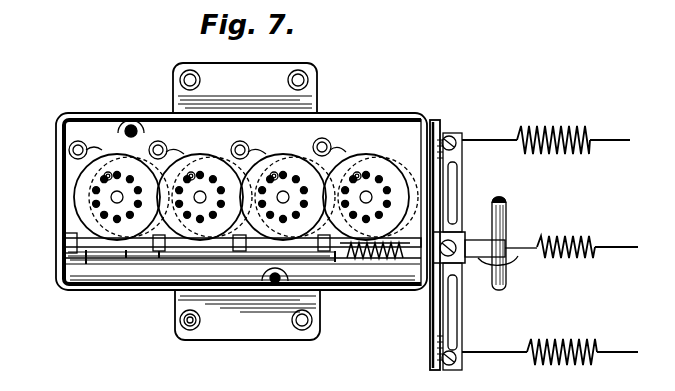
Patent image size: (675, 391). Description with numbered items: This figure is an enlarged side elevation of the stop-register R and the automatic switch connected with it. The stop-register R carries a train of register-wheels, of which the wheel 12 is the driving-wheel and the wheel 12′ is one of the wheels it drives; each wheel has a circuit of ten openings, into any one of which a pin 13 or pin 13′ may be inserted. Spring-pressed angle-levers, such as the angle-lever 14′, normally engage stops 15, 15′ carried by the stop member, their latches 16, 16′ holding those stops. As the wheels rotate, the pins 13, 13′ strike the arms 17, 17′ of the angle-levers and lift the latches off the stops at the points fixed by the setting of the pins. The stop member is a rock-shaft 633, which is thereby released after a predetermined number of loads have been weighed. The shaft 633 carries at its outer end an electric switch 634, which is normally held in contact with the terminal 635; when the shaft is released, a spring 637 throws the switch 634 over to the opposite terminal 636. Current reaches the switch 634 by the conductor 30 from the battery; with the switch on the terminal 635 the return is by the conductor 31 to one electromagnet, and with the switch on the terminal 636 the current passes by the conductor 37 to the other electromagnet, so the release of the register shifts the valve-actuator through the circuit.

The register-wheel 12 is at (374, 150).
The register-wheel 12′ is at (266, 153).
The pin 13 is at (388, 176).
The pin 13′ is at (284, 159).
The angle-lever 14′ is at (243, 141).
The stop 15 is at (316, 256).
The stop 15′ is at (232, 256).
The latch 16 is at (335, 262).
The latch 16′ is at (220, 313).
The arm 17 is at (331, 146).
The arm 17′ is at (258, 150).
The conductor 30 is at (620, 242).
The conductor 31 is at (613, 348).
The conductor 37 is at (622, 133).
The shaft 633 is at (127, 252).
The electric switch 634 is at (468, 234).
The terminal 635 is at (458, 322).
The terminal 636 is at (460, 171).
The spring 637 is at (384, 255).
The stop-register R is at (35, 198).